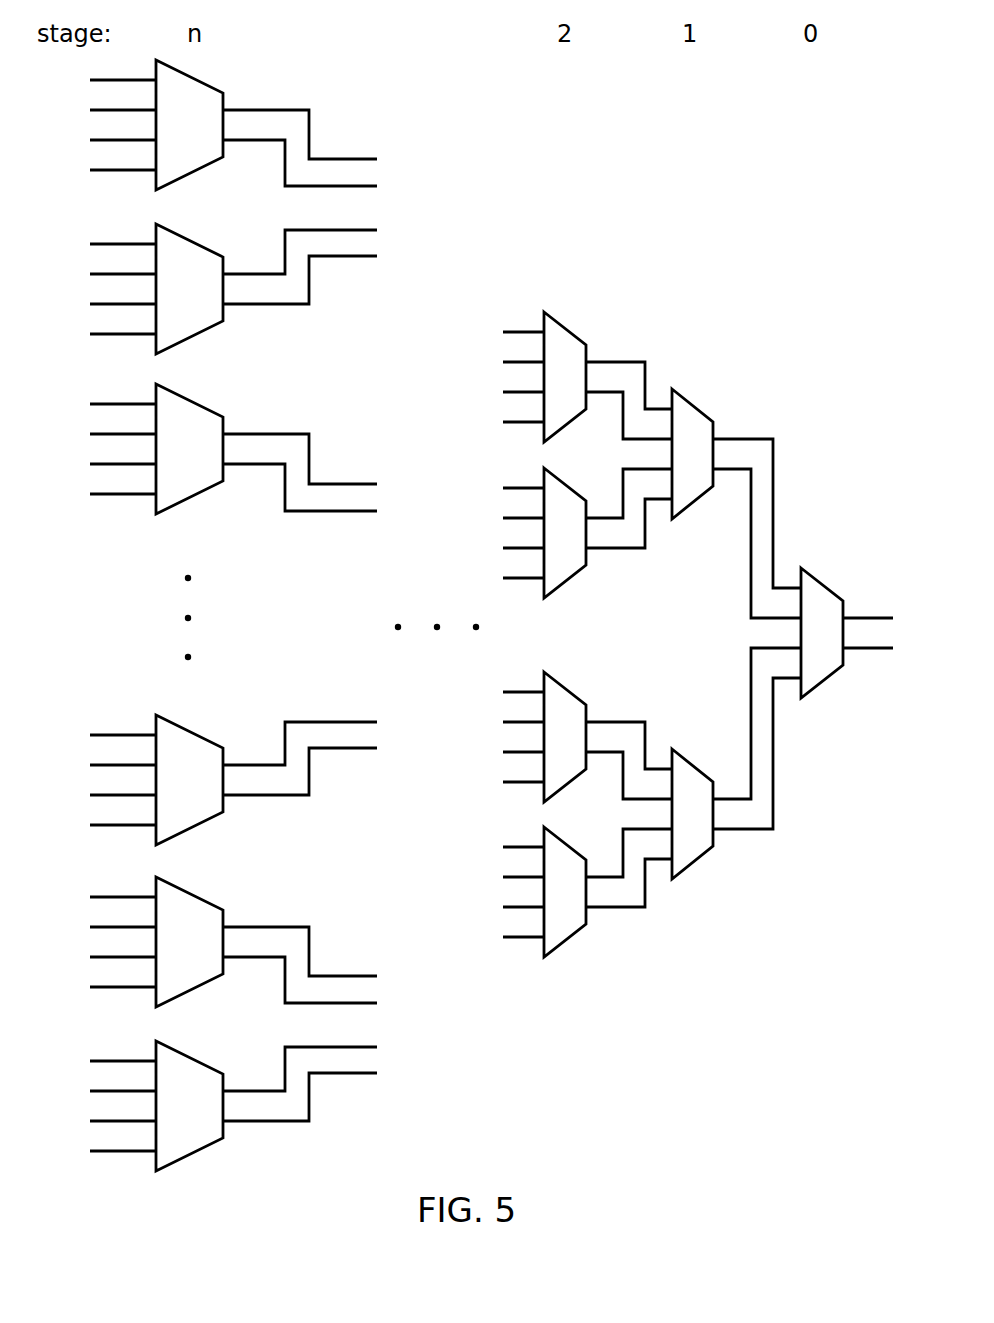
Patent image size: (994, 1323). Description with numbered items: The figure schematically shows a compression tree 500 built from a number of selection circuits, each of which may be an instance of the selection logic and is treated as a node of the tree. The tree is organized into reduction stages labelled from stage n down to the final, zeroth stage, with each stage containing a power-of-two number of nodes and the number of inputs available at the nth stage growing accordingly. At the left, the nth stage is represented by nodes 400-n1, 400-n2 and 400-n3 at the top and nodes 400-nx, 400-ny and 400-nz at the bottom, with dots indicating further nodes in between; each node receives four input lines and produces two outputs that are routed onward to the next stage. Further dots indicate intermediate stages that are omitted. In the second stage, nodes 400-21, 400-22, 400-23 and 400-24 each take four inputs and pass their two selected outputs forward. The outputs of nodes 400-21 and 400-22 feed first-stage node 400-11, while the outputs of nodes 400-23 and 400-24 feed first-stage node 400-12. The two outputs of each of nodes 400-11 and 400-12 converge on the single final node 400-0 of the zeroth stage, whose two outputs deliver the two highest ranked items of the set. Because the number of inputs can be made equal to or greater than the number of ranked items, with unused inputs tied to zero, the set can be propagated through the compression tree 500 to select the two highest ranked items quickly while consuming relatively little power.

The selection logic node 400-n1 is at (211, 87).
The selection logic node 400-n2 is at (195, 243).
The selection logic node 400-n3 is at (195, 403).
The selection logic node 400-nx is at (200, 737).
The selection logic node 400-ny is at (193, 895).
The selection logic node 400-nz is at (193, 1059).
The selection logic node 400-21 is at (571, 333).
The selection logic node 400-22 is at (557, 478).
The selection logic node 400-23 is at (571, 693).
The selection logic node 400-24 is at (557, 837).
The selection logic node 400-11 is at (701, 411).
The selection logic node 400-12 is at (697, 859).
The selection logic node 400-0 is at (815, 580).
The compression tree 500 is at (775, 1071).